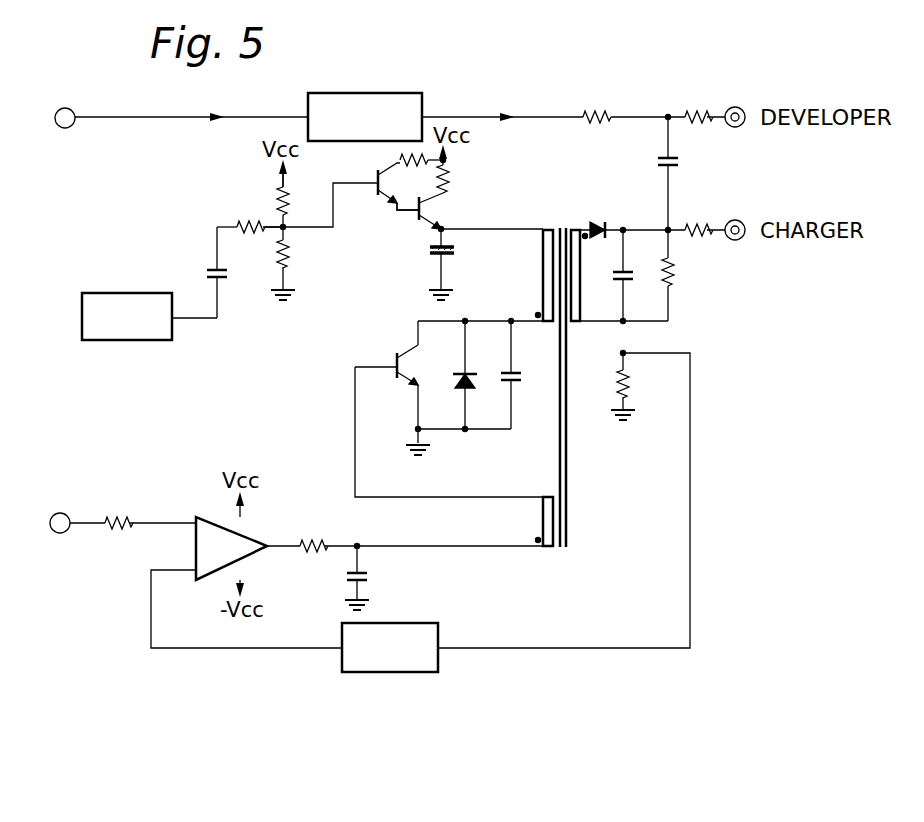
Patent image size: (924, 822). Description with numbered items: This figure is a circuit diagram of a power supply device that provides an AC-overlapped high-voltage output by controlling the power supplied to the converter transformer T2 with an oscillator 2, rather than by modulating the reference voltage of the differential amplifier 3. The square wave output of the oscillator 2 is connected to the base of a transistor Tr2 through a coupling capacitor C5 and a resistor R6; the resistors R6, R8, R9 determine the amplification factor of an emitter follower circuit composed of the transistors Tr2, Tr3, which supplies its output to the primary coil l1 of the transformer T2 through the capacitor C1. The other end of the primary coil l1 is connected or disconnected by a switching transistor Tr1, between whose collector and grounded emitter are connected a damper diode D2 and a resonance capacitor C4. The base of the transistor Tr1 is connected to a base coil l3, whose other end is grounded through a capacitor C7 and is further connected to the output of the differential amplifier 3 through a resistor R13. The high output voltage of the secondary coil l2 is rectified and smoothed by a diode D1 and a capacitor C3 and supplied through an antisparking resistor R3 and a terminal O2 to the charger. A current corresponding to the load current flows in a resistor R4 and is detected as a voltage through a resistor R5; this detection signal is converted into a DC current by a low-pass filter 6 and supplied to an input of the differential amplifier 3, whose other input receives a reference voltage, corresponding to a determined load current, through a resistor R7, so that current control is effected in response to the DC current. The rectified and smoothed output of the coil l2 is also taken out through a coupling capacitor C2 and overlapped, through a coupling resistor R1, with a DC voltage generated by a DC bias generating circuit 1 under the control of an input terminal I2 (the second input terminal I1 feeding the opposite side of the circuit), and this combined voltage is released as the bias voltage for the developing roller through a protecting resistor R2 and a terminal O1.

The DC bias generating circuit 1 is at (369, 94).
The oscillator 2 is at (135, 293).
The differential amplifier 3 is at (253, 535).
The low-pass filter 6 is at (423, 624).
The first input terminal I1 is at (66, 108).
The input terminal I2 is at (60, 513).
The terminal O1 is at (742, 110).
The terminal O2 is at (742, 226).
The coupling resistor R1 is at (591, 110).
The protecting resistor R2 is at (690, 110).
The antisparking resistor R3 is at (690, 226).
The resistor R4 is at (674, 281).
The resistor R5 is at (626, 383).
The resistor R6 is at (240, 222).
The resistor R7 is at (116, 535).
The resistor R8 is at (288, 200).
The resistor R9 is at (289, 261).
The resistor R13 is at (314, 542).
The capacitor C1 is at (456, 250).
The coupling capacitor C2 is at (680, 162).
The capacitor C3 is at (634, 278).
The resonance capacitor C4 is at (524, 380).
The coupling capacitor C5 is at (229, 271).
The capacitor C7 is at (365, 578).
The diode D1 is at (602, 224).
The damper diode D2 is at (474, 380).
The converter transformer T2 is at (563, 227).
The primary coil l1 is at (543, 285).
The secondary coil l2 is at (582, 278).
The base coil l3 is at (550, 519).
The transistor Tr1 is at (393, 378).
The transistor Tr2 is at (386, 200).
The transistor Tr3 is at (441, 207).